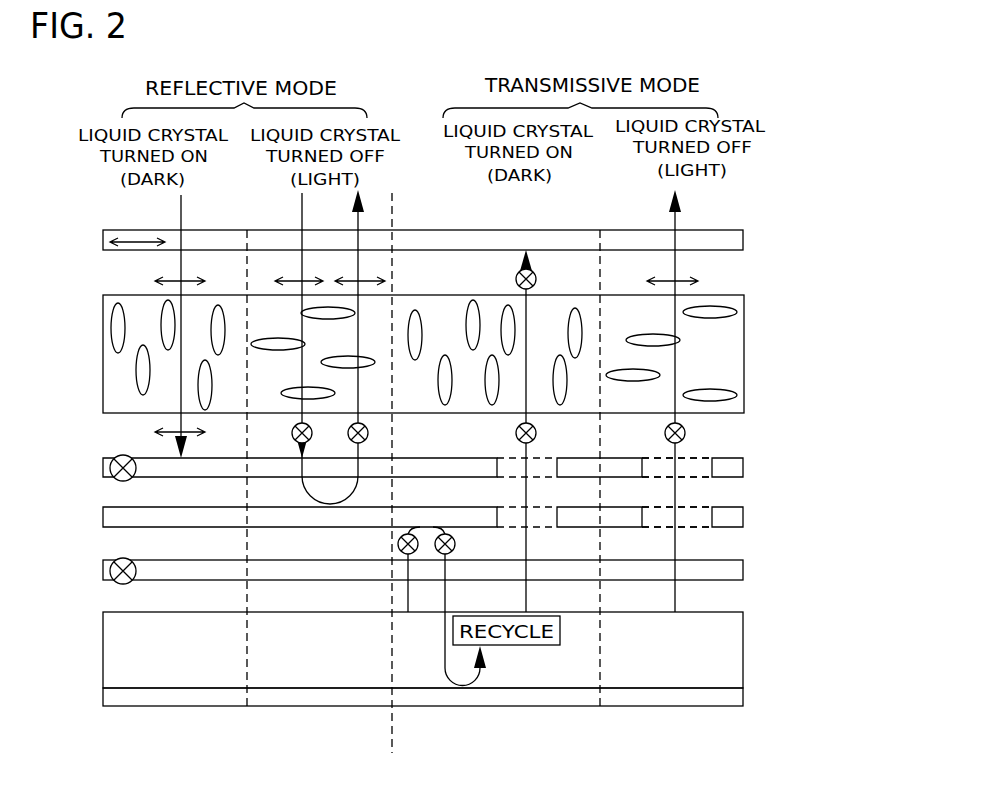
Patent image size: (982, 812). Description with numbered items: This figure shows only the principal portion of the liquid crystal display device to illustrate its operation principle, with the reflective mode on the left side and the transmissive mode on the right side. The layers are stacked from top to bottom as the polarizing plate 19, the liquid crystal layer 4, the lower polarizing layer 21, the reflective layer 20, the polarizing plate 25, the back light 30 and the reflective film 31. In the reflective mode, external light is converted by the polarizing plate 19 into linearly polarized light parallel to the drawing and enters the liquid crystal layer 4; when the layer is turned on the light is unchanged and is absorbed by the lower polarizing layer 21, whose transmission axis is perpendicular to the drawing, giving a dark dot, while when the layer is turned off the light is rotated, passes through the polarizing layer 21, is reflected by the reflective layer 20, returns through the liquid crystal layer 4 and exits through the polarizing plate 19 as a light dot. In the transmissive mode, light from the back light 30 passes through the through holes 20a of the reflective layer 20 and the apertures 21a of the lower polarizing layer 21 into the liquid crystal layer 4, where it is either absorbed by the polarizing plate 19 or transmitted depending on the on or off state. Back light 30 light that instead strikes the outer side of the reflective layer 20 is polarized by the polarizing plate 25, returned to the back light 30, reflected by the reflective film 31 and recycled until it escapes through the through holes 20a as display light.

The polarizing plate 19 is at (743, 233).
The liquid crystal layer 4 is at (733, 347).
The lower polarizing layer 21 is at (743, 467).
The apertures 21a is at (690, 462).
The reflective layer 20 is at (743, 514).
The through holes 20a is at (691, 511).
The polarizing plate 25 is at (743, 566).
The back light 30 is at (733, 650).
The reflective film 31 is at (733, 695).